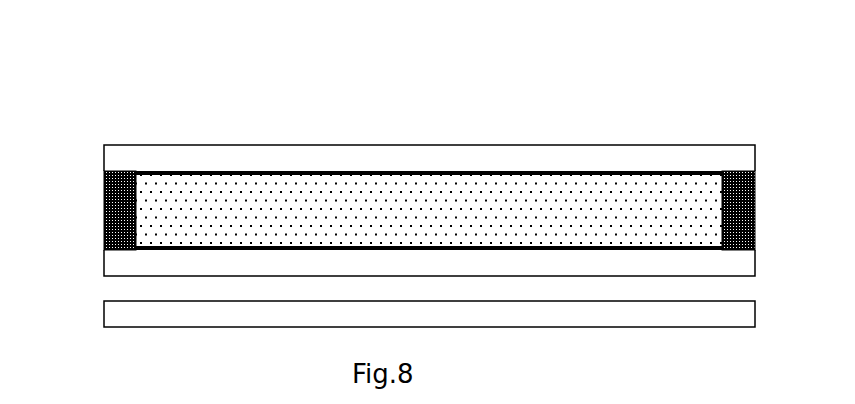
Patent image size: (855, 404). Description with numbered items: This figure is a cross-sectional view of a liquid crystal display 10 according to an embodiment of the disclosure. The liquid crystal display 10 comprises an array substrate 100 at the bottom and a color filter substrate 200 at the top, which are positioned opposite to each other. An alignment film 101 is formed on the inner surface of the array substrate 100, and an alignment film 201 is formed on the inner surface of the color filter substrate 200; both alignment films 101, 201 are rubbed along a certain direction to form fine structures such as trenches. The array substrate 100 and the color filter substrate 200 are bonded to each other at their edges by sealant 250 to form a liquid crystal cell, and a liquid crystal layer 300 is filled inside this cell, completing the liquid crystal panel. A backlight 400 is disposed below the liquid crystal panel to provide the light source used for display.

The liquid crystal display 10 is at (618, 45).
The array substrate 100 is at (688, 259).
The alignment film 101 is at (668, 245).
The color filter substrate 200 is at (689, 161).
The alignment film 201 is at (543, 172).
The sealant 250 is at (115, 222).
The liquid crystal layer 300 is at (312, 213).
The backlight 400 is at (688, 311).